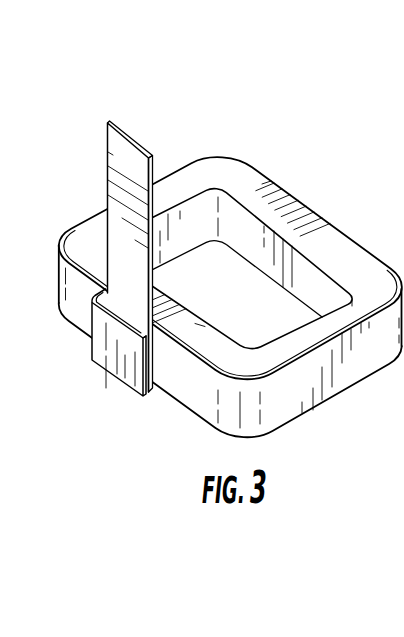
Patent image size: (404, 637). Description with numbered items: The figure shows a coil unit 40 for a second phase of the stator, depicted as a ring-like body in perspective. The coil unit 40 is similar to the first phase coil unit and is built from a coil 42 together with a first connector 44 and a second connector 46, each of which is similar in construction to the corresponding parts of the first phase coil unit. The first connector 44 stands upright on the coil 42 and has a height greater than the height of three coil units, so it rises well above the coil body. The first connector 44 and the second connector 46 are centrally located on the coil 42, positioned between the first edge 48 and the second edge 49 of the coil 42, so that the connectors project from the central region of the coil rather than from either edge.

The coil unit 40 is at (230, 272).
The coil 42 is at (335, 252).
The first connector 44 is at (128, 212).
The second connector 46 is at (113, 357).
The first edge 48 is at (186, 178).
The second edge 49 is at (369, 379).